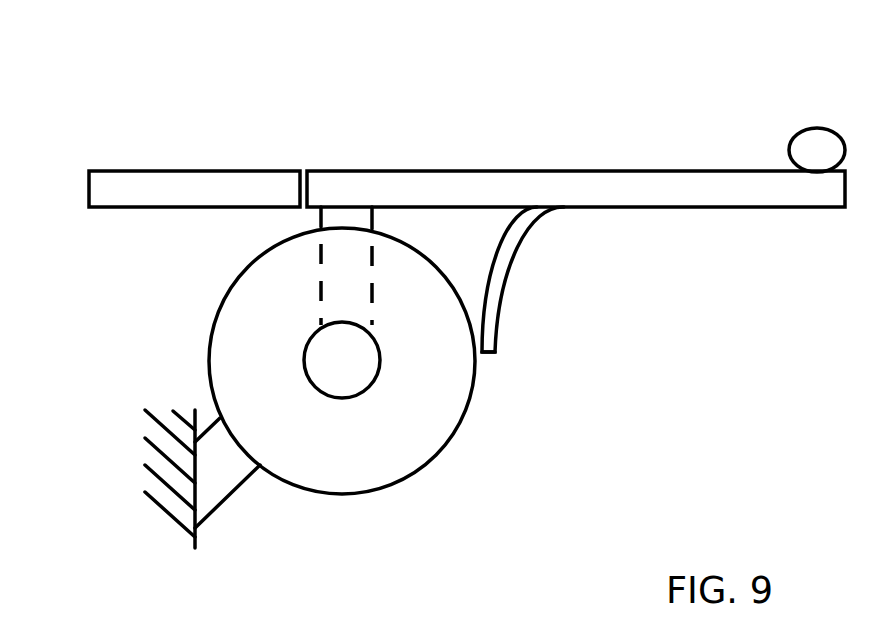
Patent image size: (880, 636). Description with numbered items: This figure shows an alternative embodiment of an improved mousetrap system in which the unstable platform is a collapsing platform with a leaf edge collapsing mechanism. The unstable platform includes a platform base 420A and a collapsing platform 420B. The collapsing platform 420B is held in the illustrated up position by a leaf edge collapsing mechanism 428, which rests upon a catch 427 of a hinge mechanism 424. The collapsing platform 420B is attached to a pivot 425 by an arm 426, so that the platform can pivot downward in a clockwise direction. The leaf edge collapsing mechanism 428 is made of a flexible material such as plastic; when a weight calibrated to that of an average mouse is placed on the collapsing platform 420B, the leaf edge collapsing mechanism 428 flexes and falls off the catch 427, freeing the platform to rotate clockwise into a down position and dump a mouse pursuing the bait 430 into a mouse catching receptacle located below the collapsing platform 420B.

The platform base 420A is at (235, 170).
The collapsing platform 420B is at (472, 170).
The hinge mechanism 424 is at (408, 457).
The pivot 425 is at (370, 360).
The arm 426 is at (330, 221).
The catch 427 is at (485, 372).
The leaf edge collapsing mechanism 428 is at (513, 257).
The bait 430 is at (812, 128).